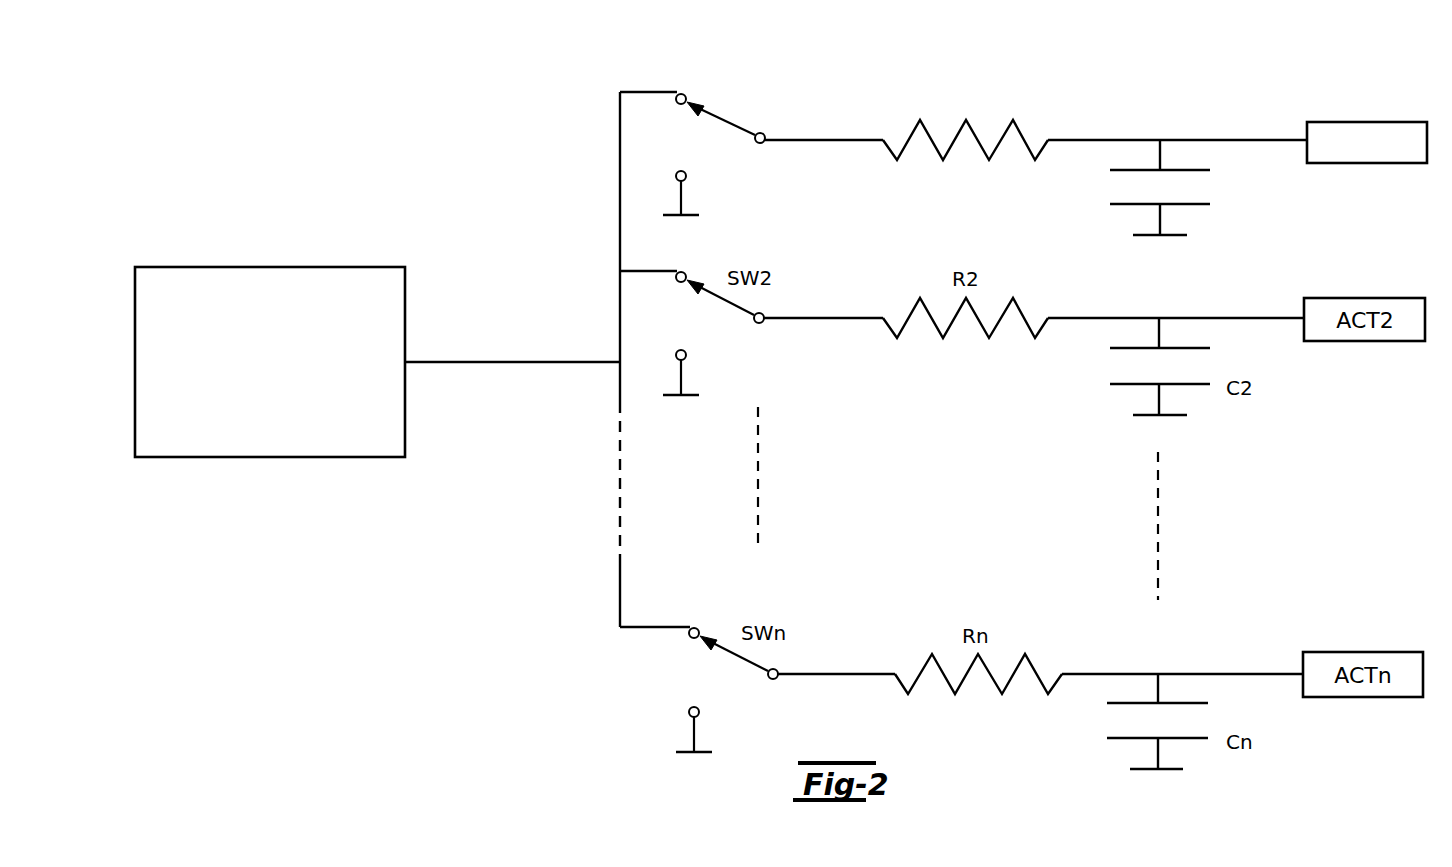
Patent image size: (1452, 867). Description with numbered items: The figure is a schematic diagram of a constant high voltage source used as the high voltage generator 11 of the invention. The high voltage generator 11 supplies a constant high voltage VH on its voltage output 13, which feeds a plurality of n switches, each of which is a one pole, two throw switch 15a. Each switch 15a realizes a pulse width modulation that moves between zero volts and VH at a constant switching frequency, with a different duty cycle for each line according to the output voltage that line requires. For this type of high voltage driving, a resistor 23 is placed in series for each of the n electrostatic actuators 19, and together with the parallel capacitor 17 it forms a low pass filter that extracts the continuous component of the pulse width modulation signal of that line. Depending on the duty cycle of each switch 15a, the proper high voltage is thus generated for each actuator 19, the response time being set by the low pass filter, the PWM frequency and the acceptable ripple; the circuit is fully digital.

The high voltage generator 11 is at (271, 267).
The voltage output 13 is at (512, 361).
The one pole, two throw switch 15a is at (762, 84).
The capacitor 17 is at (1163, 156).
The electrostatic actuator 19 is at (1367, 122).
The resistor 23 is at (969, 91).